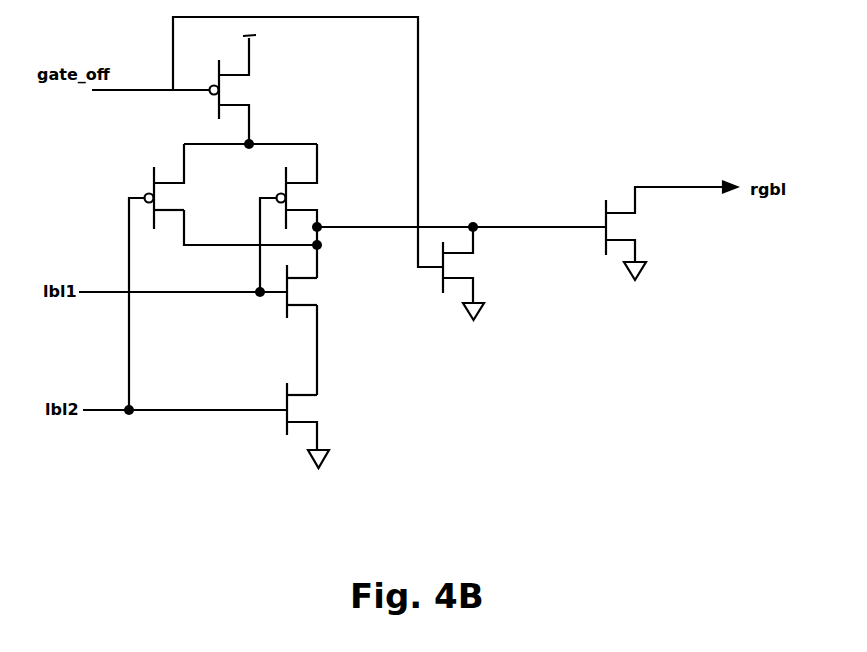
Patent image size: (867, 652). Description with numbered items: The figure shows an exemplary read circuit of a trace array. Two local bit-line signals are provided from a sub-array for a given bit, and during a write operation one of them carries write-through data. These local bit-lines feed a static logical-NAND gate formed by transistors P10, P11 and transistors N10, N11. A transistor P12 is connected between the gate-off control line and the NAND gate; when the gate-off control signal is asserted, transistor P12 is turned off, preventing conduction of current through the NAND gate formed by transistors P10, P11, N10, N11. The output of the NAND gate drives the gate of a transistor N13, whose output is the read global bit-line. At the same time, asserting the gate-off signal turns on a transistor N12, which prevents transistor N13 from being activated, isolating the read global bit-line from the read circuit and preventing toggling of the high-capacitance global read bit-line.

The transistor P12 is at (253, 89).
The transistor P10 is at (182, 186).
The transistor P11 is at (319, 211).
The transistor N11 is at (323, 291).
The transistor N10 is at (323, 425).
The transistor N12 is at (479, 273).
The transistor N13 is at (671, 231).